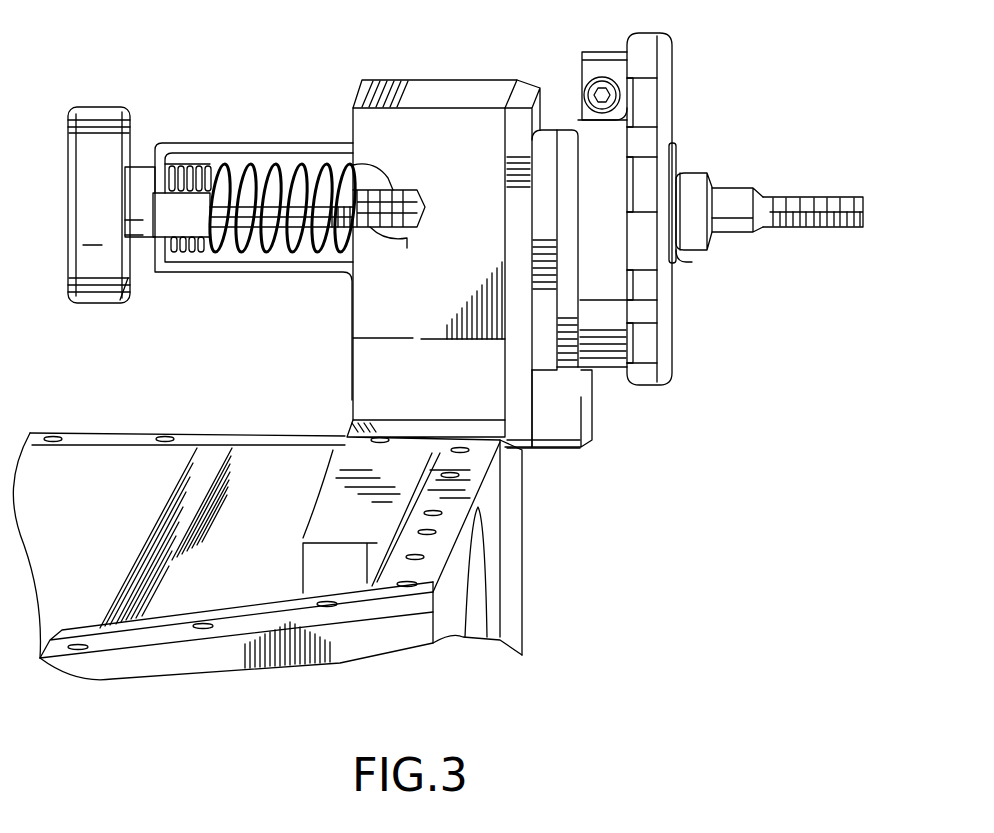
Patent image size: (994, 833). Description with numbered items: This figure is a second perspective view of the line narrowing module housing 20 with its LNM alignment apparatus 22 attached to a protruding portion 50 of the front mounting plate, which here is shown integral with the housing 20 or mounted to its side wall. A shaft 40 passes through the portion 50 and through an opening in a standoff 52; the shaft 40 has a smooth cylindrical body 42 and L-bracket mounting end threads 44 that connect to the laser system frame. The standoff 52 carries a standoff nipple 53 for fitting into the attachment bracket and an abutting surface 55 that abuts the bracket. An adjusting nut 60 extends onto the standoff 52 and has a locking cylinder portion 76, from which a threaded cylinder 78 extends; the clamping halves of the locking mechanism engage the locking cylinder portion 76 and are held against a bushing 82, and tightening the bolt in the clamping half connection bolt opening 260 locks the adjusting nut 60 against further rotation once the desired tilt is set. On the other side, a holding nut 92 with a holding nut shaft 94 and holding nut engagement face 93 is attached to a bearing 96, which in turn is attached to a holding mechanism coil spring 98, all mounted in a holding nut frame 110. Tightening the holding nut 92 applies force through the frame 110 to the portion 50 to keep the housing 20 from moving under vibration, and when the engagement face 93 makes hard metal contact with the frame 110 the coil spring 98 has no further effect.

The line narrowing module housing 20 is at (234, 511).
The LNM alignment apparatus 22 is at (705, 403).
The shaft 40 is at (780, 178).
The smooth cylindrical body 42 is at (738, 232).
The L-bracket mounting end threads 44 is at (830, 197).
The portion of the front mounting plate 50 is at (430, 123).
The standoff 52 is at (685, 257).
The standoff nipple 53 is at (692, 183).
The abutting surface 55 is at (683, 143).
The adjusting nut 60 is at (650, 115).
The locking cylinder portion 76 is at (567, 135).
The threaded cylinder 78 is at (547, 217).
The bushing 82 is at (567, 405).
The holding nut 92 is at (102, 117).
The holding nut engagement face 93 is at (128, 280).
The holding nut shaft 94 is at (140, 237).
The bearing 96 is at (190, 160).
The holding mechanism coil spring 98 is at (270, 167).
The holding nut frame 110 is at (277, 270).
The clamping half connection bolt opening 260 is at (602, 90).